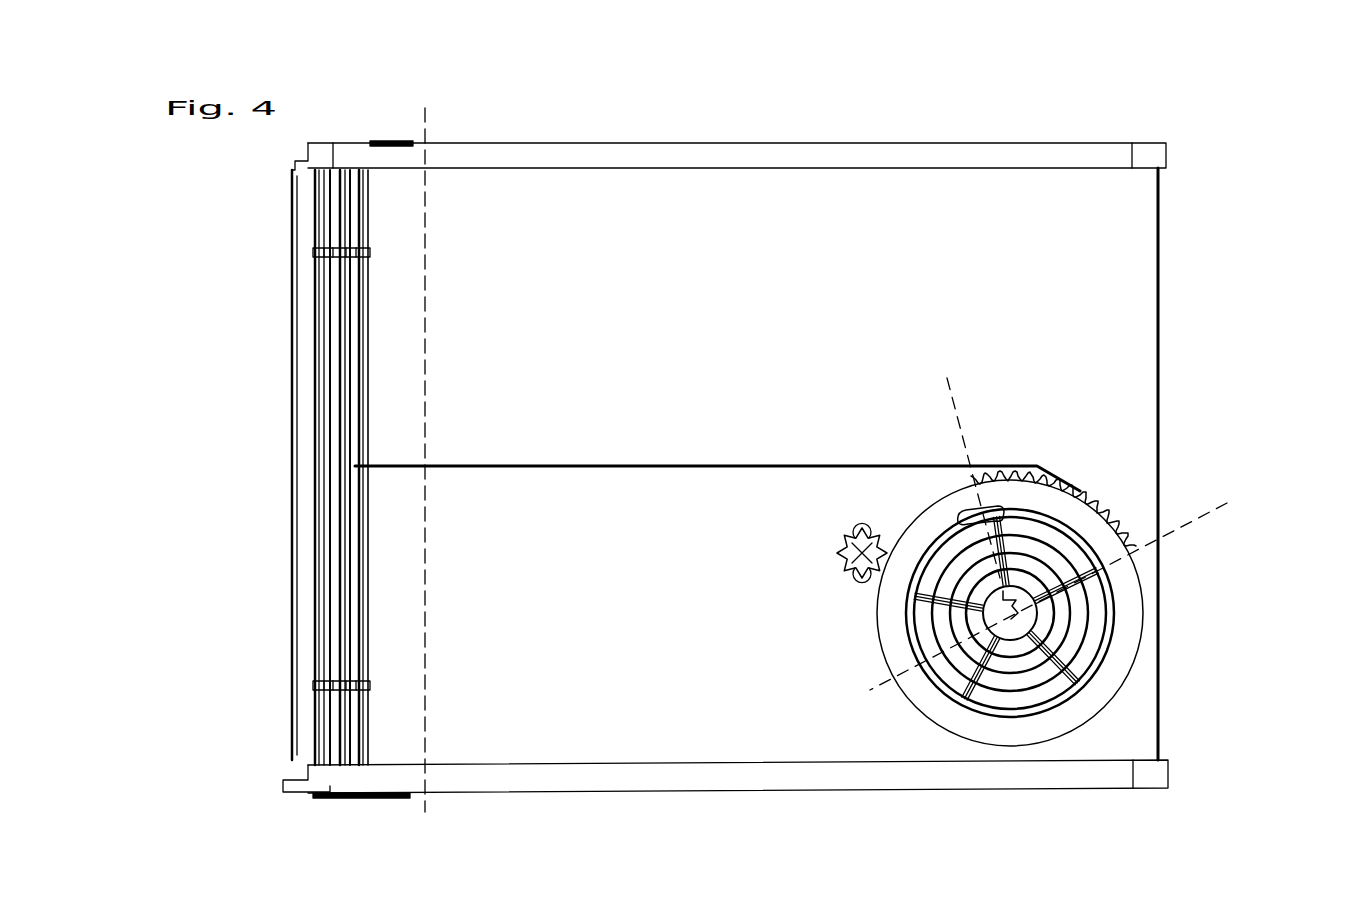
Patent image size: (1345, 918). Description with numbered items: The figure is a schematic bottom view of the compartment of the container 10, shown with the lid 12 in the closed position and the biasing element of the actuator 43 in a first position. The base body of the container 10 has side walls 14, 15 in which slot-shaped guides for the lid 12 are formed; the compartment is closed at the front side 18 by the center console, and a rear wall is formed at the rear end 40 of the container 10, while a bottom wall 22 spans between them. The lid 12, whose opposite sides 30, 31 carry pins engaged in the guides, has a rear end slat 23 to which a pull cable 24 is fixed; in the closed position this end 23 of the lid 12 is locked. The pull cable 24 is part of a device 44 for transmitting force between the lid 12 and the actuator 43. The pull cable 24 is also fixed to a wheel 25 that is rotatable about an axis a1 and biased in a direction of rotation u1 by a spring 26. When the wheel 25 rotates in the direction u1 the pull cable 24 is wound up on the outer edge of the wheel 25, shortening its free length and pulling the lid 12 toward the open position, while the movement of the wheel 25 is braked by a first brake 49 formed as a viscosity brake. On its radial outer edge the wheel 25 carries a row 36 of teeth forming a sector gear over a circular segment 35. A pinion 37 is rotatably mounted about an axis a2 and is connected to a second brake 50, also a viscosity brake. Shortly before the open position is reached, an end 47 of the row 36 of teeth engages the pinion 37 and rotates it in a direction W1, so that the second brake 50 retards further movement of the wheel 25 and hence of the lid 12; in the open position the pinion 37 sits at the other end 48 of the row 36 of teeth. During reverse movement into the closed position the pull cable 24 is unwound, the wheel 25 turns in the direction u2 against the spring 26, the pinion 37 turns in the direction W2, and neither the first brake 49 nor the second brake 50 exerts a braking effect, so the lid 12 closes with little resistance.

The container 10 is at (1207, 168).
The lid 12 is at (360, 592).
The side wall 14 is at (905, 155).
The side wall 15 is at (722, 785).
The front side 18 is at (1176, 258).
The bottom wall 22 is at (828, 245).
The rear end slat 23 is at (365, 280).
The pull cable 24 is at (718, 465).
The wheel 25 is at (1030, 732).
The spring 26 is at (940, 648).
The side of the lid 30 is at (351, 160).
The side of the lid 31 is at (352, 778).
The circular segment 35 is at (1216, 504).
The row of teeth 36 is at (1127, 525).
The pinion 37 is at (843, 562).
The rear end 40 is at (270, 452).
The actuator 43 is at (940, 745).
The device for transmitting force 44 is at (609, 450).
The end of the row of teeth 47 is at (1150, 565).
The end of the row of teeth 48 is at (968, 475).
The first brake 49 is at (1130, 648).
The second brake 50 is at (843, 595).
The axis of rotation of the wheel a1 is at (1067, 690).
The axis of rotation of the pinion a2 is at (843, 545).
The direction of rotation of the wheel u1 is at (1139, 484).
The direction of rotation of the wheel u2 is at (1072, 444).
The direction of rotation of the pinion W1 is at (809, 516).
The direction of rotation of the pinion W2 is at (915, 516).